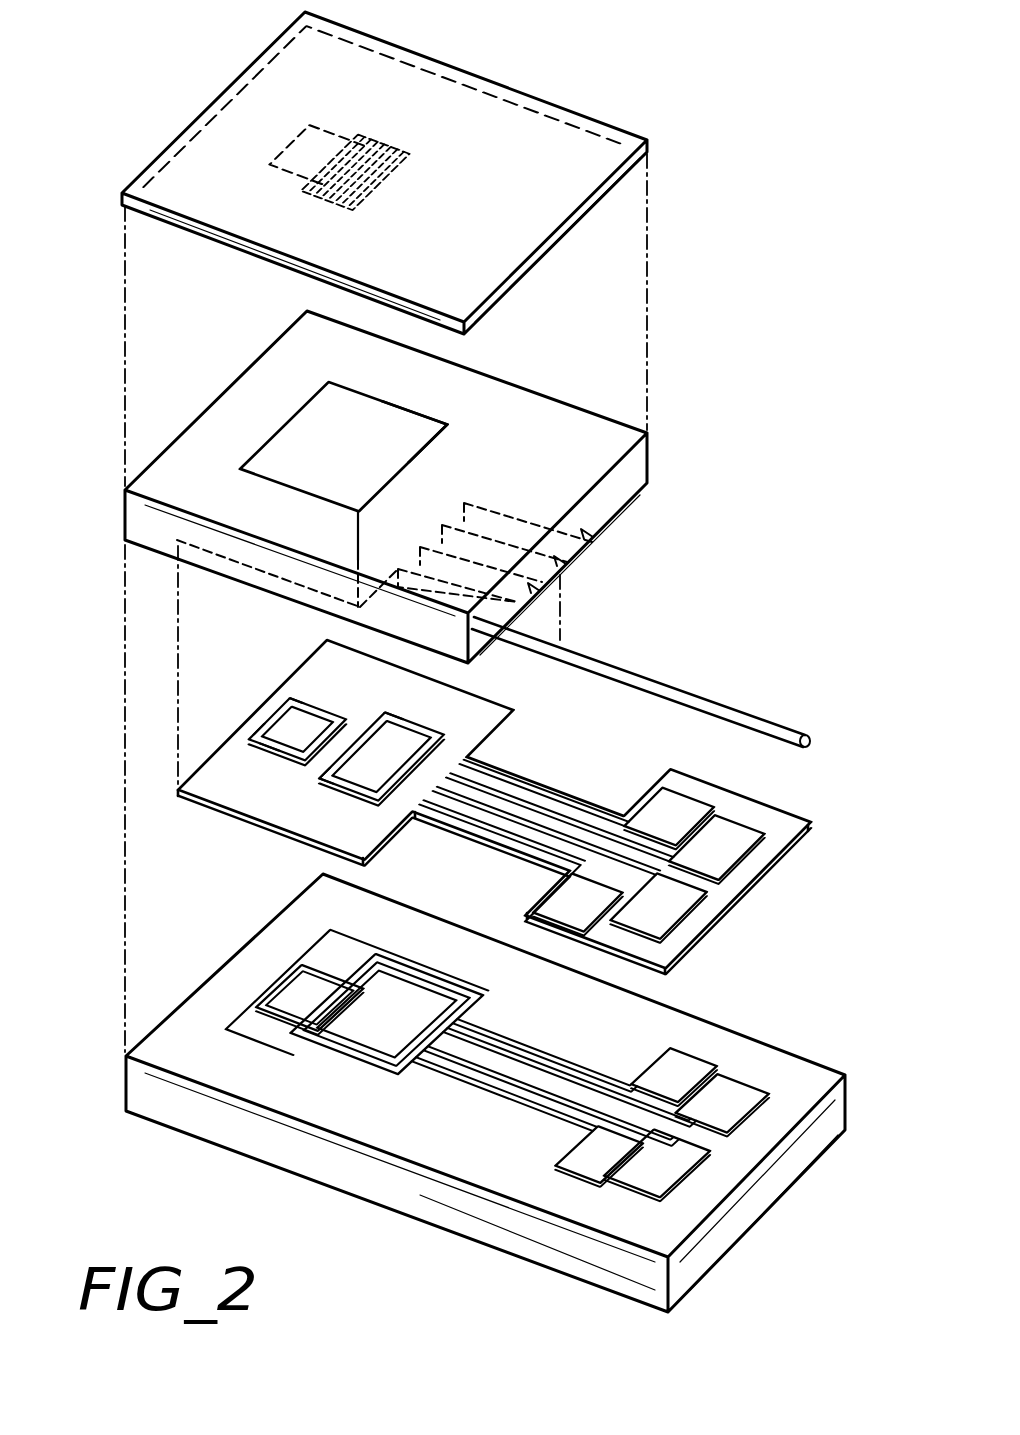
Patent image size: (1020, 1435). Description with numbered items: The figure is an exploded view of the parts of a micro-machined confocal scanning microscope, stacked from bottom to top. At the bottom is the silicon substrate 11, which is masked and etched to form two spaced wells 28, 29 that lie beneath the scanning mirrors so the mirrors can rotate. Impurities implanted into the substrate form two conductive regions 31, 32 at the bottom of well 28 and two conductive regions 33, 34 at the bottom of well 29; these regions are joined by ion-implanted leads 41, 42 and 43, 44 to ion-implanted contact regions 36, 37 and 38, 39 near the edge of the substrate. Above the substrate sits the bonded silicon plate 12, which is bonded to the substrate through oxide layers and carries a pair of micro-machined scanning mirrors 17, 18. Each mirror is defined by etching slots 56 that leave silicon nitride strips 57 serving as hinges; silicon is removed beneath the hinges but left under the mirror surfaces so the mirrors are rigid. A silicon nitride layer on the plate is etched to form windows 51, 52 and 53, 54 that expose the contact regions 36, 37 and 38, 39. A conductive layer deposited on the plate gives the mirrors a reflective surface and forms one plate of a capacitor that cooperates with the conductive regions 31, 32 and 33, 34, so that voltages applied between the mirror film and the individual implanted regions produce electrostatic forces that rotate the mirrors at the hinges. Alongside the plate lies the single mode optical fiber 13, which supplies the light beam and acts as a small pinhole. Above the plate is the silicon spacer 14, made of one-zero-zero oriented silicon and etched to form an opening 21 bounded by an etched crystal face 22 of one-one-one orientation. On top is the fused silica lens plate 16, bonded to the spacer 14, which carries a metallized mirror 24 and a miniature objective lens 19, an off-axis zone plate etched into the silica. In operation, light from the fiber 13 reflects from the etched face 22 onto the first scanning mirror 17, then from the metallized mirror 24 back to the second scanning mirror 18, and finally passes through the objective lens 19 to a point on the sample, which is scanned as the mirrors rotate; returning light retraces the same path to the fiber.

The silicon substrate 11 is at (130, 1065).
The bonded silicon plate 12 is at (767, 803).
The single mode optical fiber 13 is at (692, 693).
The silicon spacer 14 is at (652, 458).
The fused silica lens plate 16 is at (650, 143).
The first scanning mirror 17 is at (300, 722).
The second scanning mirror 18 is at (378, 770).
The miniature objective lens 19 is at (403, 148).
The opening 21 is at (417, 407).
The 111 face 22 is at (298, 414).
The metallized mirror 24 is at (290, 143).
The well 28 is at (300, 1014).
The well 29 is at (322, 1042).
The conductive region 31 is at (308, 1015).
The conductive region 32 is at (310, 985).
The conductive region 33 is at (362, 1052).
The conductive region 34 is at (418, 1055).
The ion-implanted contact region 36 is at (580, 1165).
The ion-implanted contact region 37 is at (680, 1073).
The ion-implanted contact region 38 is at (665, 1165).
The ion-implanted contact region 39 is at (728, 1108).
The ion-implanted lead 41 is at (575, 1114).
The ion-implanted lead 42 is at (518, 1048).
The ion-implanted lead 43 is at (505, 1087).
The ion-implanted lead 44 is at (585, 1082).
The window 51 is at (560, 880).
The window 52 is at (660, 820).
The window 53 is at (665, 910).
The window 54 is at (715, 855).
The slot 56 is at (320, 773).
The silicon nitride strip 57 is at (268, 732).